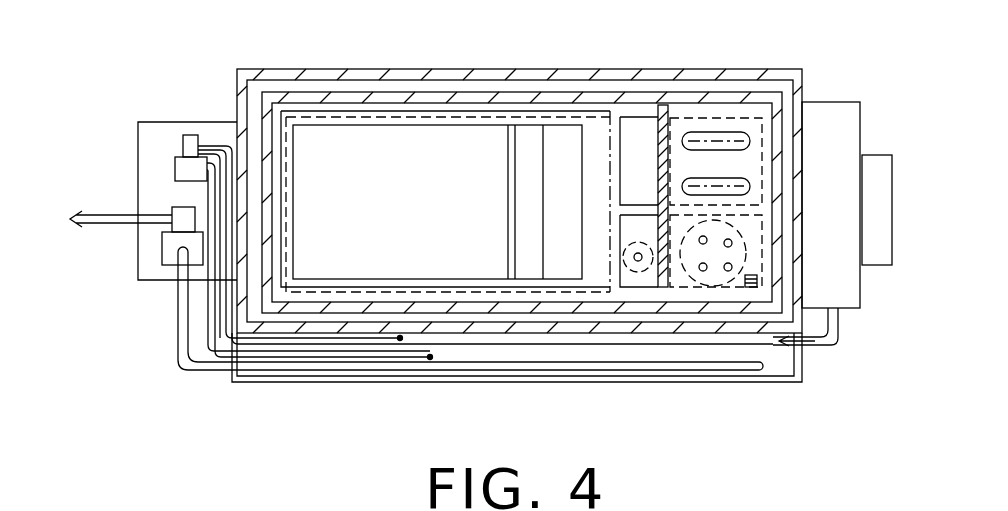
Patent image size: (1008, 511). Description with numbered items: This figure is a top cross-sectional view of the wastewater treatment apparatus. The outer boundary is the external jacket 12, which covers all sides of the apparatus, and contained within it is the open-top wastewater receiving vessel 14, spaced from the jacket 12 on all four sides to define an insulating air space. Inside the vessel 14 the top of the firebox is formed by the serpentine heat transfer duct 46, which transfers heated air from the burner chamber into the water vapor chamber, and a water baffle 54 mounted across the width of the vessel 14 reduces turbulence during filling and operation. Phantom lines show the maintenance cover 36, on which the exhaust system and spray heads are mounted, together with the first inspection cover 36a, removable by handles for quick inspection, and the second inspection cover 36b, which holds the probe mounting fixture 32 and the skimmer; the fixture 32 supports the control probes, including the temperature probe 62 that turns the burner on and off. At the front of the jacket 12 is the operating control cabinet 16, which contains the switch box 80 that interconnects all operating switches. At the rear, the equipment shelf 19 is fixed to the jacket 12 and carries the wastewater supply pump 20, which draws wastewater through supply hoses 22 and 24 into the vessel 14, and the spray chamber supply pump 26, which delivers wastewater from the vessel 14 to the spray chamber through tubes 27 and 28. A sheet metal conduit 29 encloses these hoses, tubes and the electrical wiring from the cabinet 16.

The external jacket 12 is at (283, 69).
The wastewater receiving vessel 14 is at (338, 92).
The operating control cabinet 16 is at (833, 102).
The equipment shelf 19 is at (157, 280).
The wastewater supply pump 20 is at (138, 266).
The supply hose 22 is at (93, 223).
The supply hose 24 is at (178, 327).
The spray chamber supply pump 26 is at (190, 135).
The tube 27 is at (205, 188).
The tube 28 is at (213, 143).
The sheet metal conduit 29 is at (352, 382).
The probe mounting fixture 32 is at (708, 284).
The maintenance cover 36 is at (528, 117).
The first inspection cover 36a is at (725, 116).
The second inspection cover 36b is at (732, 316).
The serpentine heat transfer duct 46 is at (431, 181).
The water baffle 54 is at (664, 106).
The temperature probe 62 is at (638, 272).
The switch box 80 is at (878, 155).